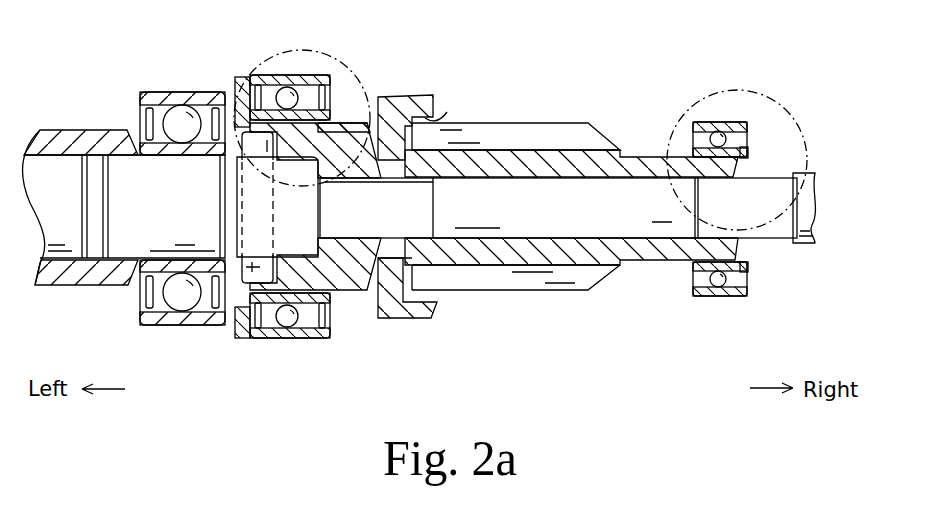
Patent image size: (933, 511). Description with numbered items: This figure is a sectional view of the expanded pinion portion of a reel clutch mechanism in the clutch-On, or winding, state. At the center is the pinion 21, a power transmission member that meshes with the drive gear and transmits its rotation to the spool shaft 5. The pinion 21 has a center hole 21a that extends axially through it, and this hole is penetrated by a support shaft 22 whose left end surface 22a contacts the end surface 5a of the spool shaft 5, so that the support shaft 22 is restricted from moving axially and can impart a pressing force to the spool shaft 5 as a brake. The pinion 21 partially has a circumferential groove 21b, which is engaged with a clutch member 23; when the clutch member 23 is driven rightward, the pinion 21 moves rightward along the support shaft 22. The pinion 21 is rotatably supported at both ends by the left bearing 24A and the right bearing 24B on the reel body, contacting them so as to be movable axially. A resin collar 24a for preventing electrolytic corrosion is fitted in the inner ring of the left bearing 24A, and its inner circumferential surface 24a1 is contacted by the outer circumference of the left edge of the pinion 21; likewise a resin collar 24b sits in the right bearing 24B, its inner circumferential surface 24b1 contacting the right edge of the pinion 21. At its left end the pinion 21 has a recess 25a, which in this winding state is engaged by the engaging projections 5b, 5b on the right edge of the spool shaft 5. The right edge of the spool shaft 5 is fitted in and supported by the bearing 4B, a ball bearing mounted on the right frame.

The bearing 4B is at (162, 92).
The spool shaft 5 is at (131, 222).
The end surface of the spool shaft 5a is at (360, 126).
The engaging projection 5b is at (228, 128).
The pinion 21 is at (610, 127).
The center hole 21a is at (582, 242).
The circumferential groove 21b is at (428, 118).
The support shaft 22 is at (522, 210).
The left end surface of the support shaft 22a is at (340, 234).
The clutch member 23 is at (393, 319).
The left bearing 24A is at (305, 76).
The right bearing 24B is at (715, 122).
The resin collar 24a is at (332, 100).
The inner circumferential surface of the collar 24a1 is at (348, 126).
The resin collar 24b is at (752, 148).
The inner circumferential surface of the collar 24b1 is at (744, 160).
The recess 25a is at (282, 122).